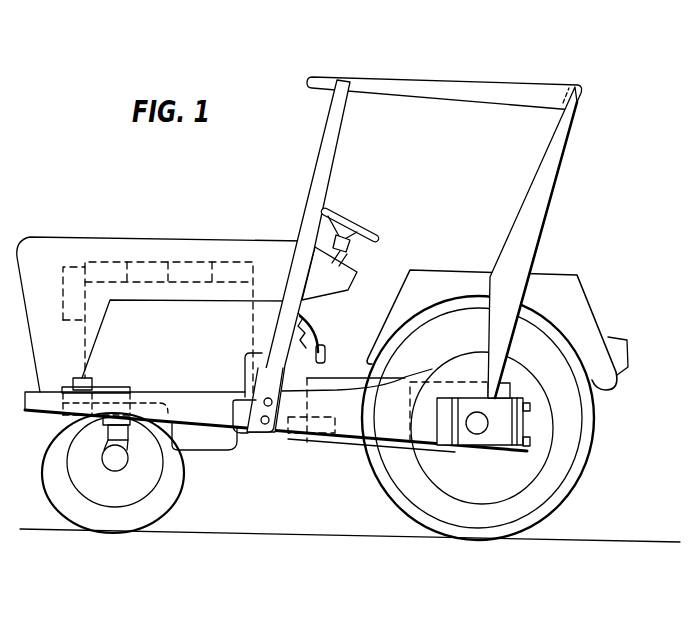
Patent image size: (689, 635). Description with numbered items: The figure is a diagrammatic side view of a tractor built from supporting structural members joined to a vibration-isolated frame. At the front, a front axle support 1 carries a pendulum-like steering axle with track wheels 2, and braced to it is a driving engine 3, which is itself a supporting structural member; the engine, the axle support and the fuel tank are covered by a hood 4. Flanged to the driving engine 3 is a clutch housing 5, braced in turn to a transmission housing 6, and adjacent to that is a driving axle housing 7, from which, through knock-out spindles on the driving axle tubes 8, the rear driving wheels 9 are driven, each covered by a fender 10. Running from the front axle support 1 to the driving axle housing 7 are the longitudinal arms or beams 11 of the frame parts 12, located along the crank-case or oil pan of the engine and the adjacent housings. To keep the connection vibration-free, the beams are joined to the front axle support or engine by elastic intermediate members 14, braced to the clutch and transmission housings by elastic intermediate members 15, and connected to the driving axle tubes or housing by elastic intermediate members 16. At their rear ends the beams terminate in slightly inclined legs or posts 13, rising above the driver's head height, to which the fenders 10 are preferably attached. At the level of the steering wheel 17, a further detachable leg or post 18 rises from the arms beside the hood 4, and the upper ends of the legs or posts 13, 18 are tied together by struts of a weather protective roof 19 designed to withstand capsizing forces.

The front axle support 1 is at (101, 425).
The track wheels 2 is at (140, 513).
The driving engine 3 is at (153, 313).
The hood 4 is at (45, 247).
The clutch housing 5 is at (265, 437).
The transmission housing 6 is at (352, 447).
The driving axle housing 7 is at (425, 443).
The driving axle tubes 8 is at (490, 445).
The rear driving wheels 9 is at (557, 497).
The fender 10 is at (573, 293).
The longitudinal arms or beams 11 is at (213, 422).
The frame parts 12 is at (380, 445).
The legs or posts 13 is at (548, 165).
The elastic intermediate members 14 is at (78, 380).
The elastic intermediate members 15 is at (322, 440).
The elastic intermediate members 16 is at (450, 450).
The steering wheel 17 is at (373, 233).
The leg or post 18 is at (320, 172).
The weather protective roof 19 is at (442, 80).